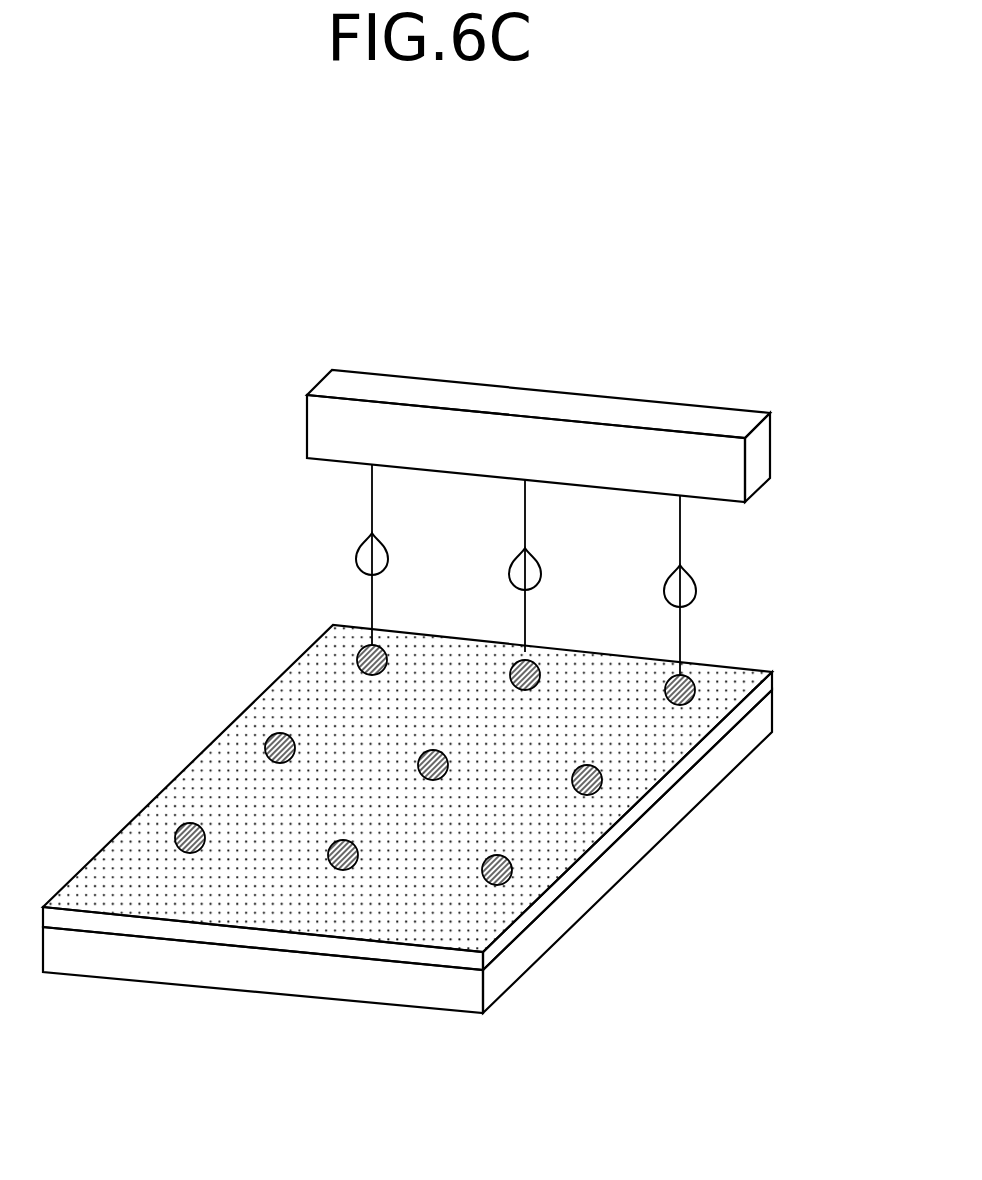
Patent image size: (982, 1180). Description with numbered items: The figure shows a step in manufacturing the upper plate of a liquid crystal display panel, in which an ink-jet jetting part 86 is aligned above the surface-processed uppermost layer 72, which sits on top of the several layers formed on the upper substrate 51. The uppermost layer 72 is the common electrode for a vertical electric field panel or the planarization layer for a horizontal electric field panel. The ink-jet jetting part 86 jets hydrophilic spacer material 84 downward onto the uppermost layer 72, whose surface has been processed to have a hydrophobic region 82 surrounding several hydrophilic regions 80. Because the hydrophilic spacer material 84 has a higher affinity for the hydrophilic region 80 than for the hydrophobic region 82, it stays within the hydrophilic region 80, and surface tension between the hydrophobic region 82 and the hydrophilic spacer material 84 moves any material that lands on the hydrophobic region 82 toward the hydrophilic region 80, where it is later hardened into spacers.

The upper substrate 51 is at (773, 717).
The uppermost layer 72 is at (773, 683).
The hydrophilic region 80 is at (693, 700).
The hydrophobic region 82 is at (733, 668).
The hydrophilic spacer material 84 is at (696, 589).
The ink-jet jetting part 86 is at (772, 450).